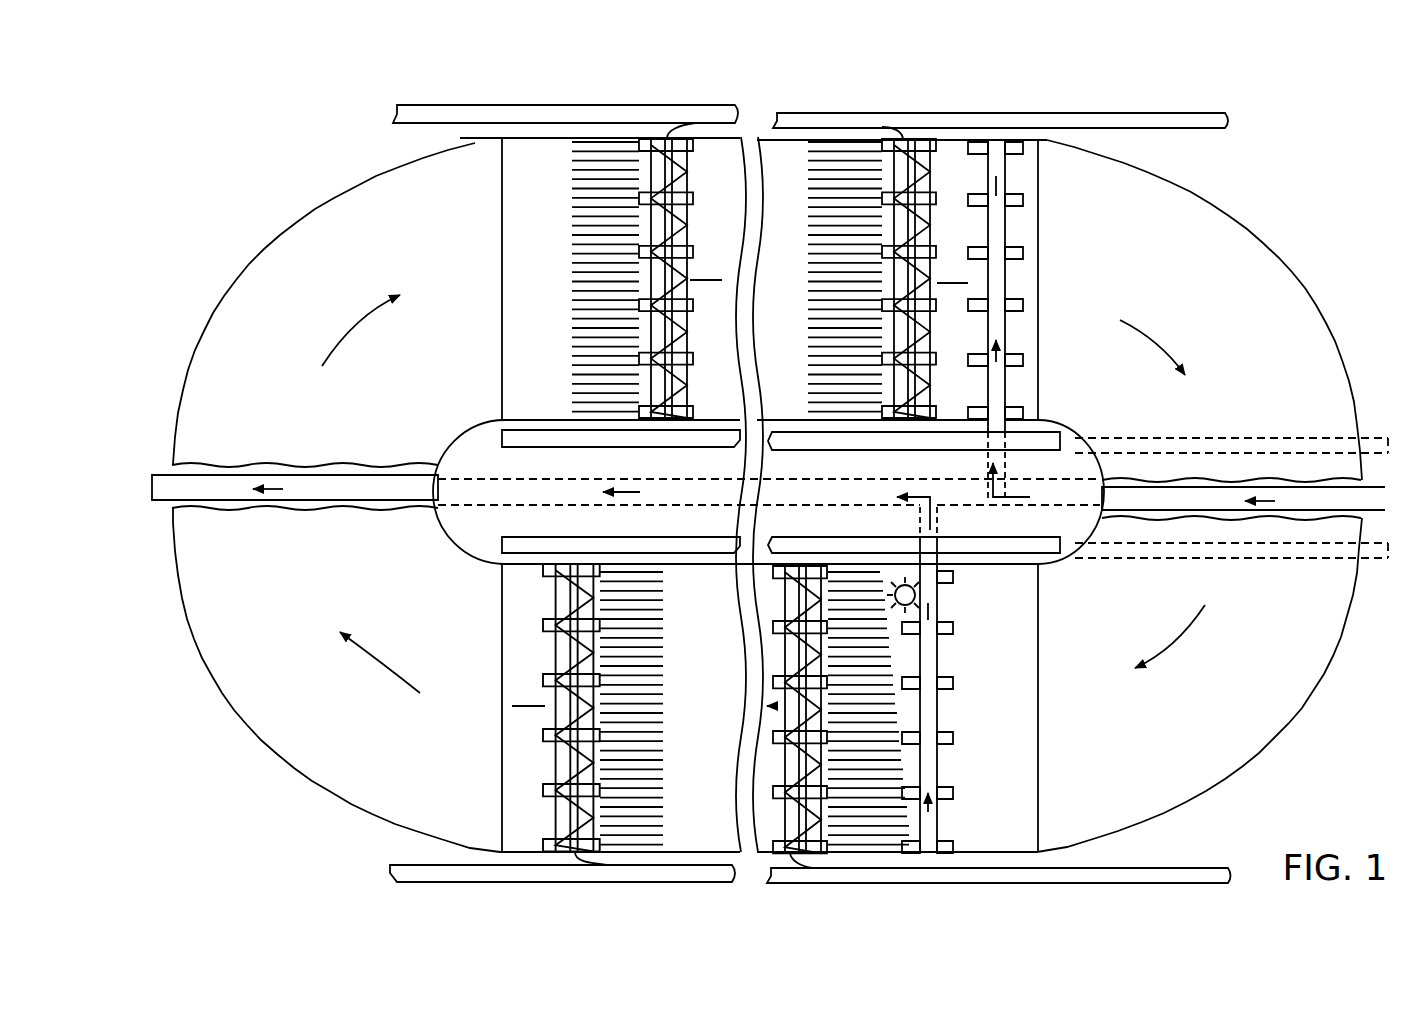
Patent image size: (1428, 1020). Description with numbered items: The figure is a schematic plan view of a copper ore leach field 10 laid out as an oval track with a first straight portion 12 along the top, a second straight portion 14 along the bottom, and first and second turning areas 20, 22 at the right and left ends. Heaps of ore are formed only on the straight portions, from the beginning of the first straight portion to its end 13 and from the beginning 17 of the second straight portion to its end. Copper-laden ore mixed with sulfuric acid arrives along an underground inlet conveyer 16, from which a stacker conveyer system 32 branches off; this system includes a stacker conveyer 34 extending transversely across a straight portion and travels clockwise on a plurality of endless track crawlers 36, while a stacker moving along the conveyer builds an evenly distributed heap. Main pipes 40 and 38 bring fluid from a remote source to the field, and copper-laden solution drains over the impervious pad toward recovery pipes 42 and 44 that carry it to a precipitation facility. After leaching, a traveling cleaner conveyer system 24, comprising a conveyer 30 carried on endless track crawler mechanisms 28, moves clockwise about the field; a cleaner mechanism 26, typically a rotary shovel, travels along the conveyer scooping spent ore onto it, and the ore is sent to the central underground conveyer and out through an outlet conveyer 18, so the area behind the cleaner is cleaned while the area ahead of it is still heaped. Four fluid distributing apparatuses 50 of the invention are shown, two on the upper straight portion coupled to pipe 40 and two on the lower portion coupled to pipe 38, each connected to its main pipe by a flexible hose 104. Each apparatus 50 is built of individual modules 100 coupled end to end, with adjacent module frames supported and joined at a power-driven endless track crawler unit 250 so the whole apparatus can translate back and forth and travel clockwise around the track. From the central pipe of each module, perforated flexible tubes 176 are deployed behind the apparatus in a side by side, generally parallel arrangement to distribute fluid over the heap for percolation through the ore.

The leach field 10 is at (1300, 170).
The first straight portion 12 is at (523, 172).
The end of straight portion 13 is at (1040, 400).
The second straight portion 14 is at (510, 825).
The inlet conveyer 16 is at (1320, 503).
The beginning of straight portion 17 is at (1037, 797).
The outlet conveyer 18 is at (185, 490).
The first turning area 20 is at (1285, 300).
The second turning area 22 is at (250, 292).
The cleaner conveyer system 24 is at (940, 822).
The cleaner mechanism 26 is at (918, 592).
The endless track crawler mechanisms 28 is at (953, 630).
The conveyer 30 is at (937, 760).
The stacker conveyer system 32 is at (1015, 172).
The stacker conveyer 34 is at (1010, 236).
The endless track crawlers 36 is at (1023, 253).
The main pipe 38 is at (688, 872).
The main pipe 40 is at (791, 128).
The recovery pipe 42 is at (598, 440).
The recovery pipe 44 is at (610, 548).
The fluid distributing apparatus 50 is at (700, 230).
The individual module 100 is at (937, 228).
The flexible hose 104 is at (905, 128).
The flexible tubes 176 is at (815, 205).
The endless track crawler unit 250 is at (945, 195).